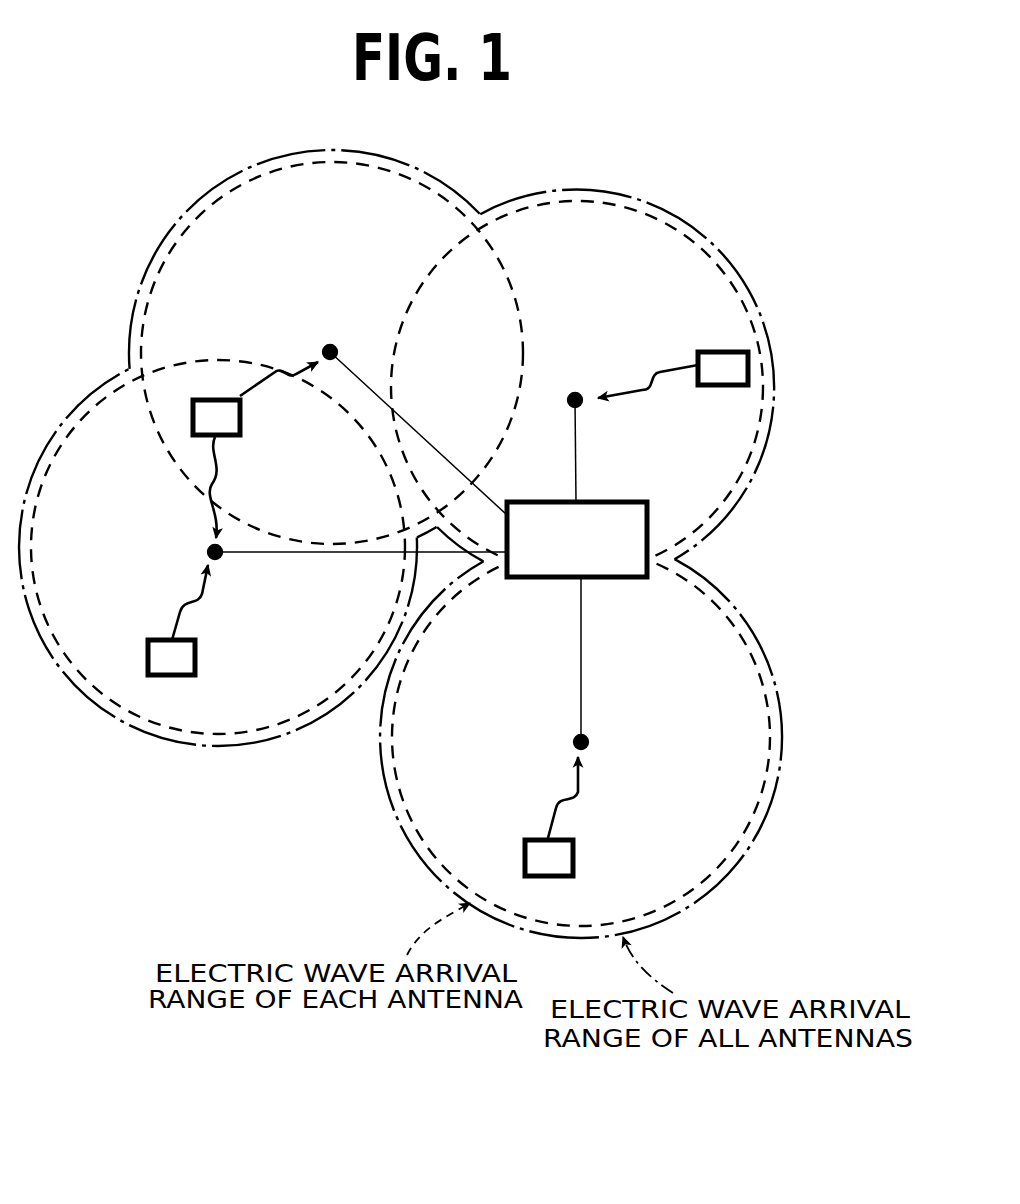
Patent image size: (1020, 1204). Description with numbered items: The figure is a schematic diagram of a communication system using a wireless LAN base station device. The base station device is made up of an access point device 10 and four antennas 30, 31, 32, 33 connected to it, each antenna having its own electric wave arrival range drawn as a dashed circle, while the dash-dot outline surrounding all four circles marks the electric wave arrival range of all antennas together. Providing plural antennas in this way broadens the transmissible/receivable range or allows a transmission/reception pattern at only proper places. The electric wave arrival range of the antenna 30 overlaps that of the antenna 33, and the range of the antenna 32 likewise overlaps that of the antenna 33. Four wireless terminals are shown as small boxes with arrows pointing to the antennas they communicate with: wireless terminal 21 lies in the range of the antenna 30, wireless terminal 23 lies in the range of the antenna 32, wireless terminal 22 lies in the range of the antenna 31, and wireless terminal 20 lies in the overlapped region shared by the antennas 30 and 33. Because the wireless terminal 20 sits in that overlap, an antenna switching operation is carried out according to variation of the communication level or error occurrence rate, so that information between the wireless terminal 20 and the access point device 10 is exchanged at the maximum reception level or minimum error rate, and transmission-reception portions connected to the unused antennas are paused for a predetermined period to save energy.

The access point device 10 is at (628, 502).
The wireless terminal 20 is at (240, 420).
The wireless terminal 21 is at (195, 657).
The wireless terminal 22 is at (573, 855).
The wireless terminal 23 is at (702, 352).
The antenna 30 is at (222, 560).
The antenna 31 is at (592, 742).
The antenna 32 is at (575, 393).
The antenna 33 is at (330, 345).